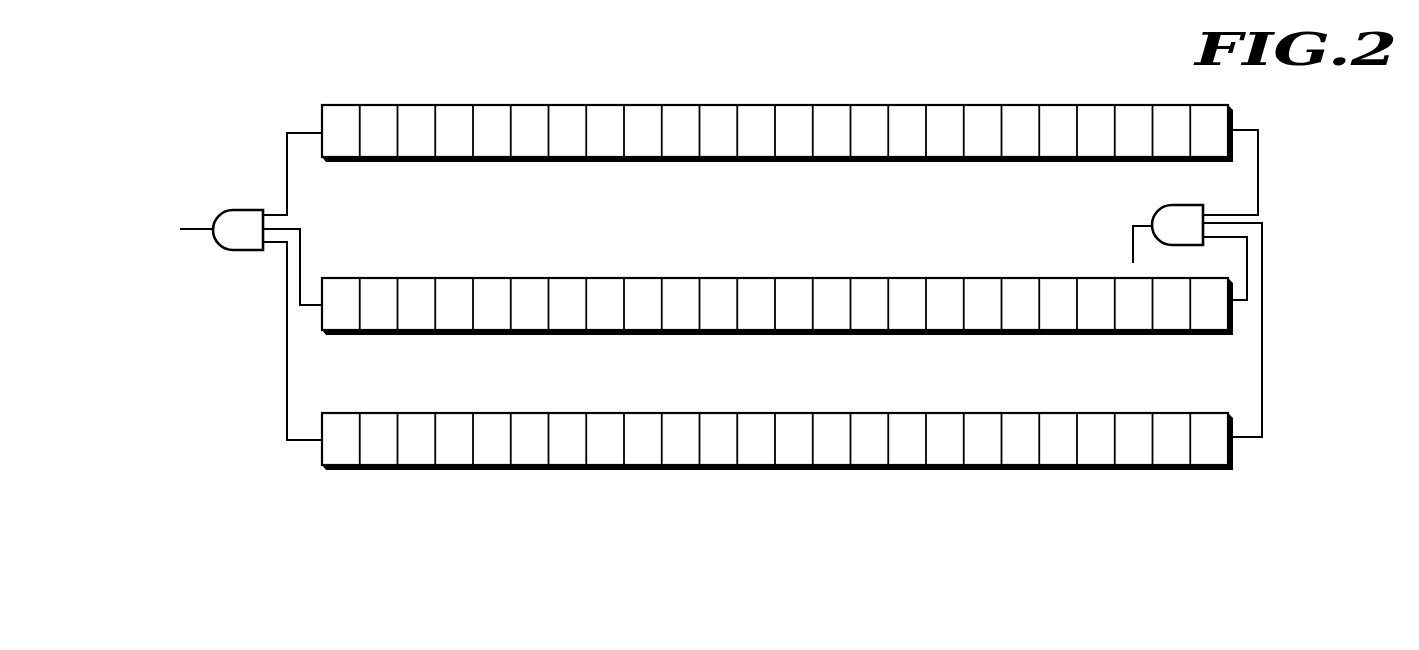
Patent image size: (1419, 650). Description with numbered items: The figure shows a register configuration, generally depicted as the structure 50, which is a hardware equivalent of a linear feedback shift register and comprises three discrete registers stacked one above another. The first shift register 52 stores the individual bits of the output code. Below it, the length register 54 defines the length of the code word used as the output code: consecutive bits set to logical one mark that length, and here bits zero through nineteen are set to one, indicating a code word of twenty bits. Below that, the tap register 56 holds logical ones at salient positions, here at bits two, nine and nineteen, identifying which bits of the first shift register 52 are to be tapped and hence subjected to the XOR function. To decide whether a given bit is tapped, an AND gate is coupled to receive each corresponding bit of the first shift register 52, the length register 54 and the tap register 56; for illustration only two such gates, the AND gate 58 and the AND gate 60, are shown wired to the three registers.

The structure 50 is at (1344, 117).
The first shift register 52 is at (488, 106).
The length register 54 is at (488, 278).
The tap register 56 is at (488, 414).
The AND gate 58 is at (242, 208).
The AND gate 60 is at (1153, 211).